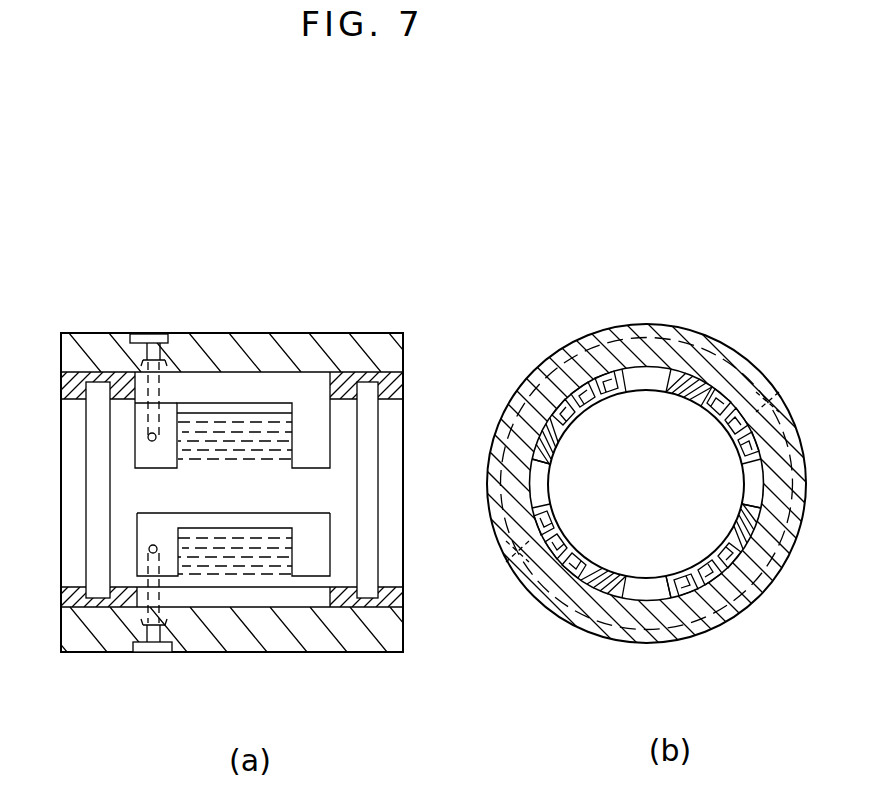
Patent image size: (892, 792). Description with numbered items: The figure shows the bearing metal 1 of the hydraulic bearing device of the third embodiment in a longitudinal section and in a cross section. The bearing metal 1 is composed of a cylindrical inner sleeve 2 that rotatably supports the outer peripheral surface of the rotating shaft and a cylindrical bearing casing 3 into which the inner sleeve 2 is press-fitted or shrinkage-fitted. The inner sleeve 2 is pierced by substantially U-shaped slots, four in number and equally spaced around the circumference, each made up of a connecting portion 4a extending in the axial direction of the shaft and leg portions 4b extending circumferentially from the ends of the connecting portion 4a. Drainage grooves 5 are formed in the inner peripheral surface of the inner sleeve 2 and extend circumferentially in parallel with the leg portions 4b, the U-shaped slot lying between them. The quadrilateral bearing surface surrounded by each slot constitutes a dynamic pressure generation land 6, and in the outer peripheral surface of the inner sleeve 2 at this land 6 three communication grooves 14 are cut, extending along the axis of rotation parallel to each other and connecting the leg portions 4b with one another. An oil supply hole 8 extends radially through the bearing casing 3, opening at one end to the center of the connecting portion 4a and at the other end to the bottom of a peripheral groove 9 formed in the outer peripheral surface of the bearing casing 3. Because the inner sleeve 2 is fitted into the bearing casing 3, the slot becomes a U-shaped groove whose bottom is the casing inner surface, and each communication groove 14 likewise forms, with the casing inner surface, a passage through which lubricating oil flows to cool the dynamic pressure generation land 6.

The bearing metal 1 is at (452, 331).
The inner sleeve 2 is at (345, 388).
The bearing casing 3 is at (352, 352).
The connecting portion 4a is at (257, 407).
The leg portions 4b is at (158, 459).
The drainage grooves 5 is at (102, 500).
The dynamic pressure generation land 6 is at (207, 433).
The oil supply hole 8 is at (148, 436).
The peripheral groove 9 is at (153, 338).
The communication grooves 14 is at (262, 433).